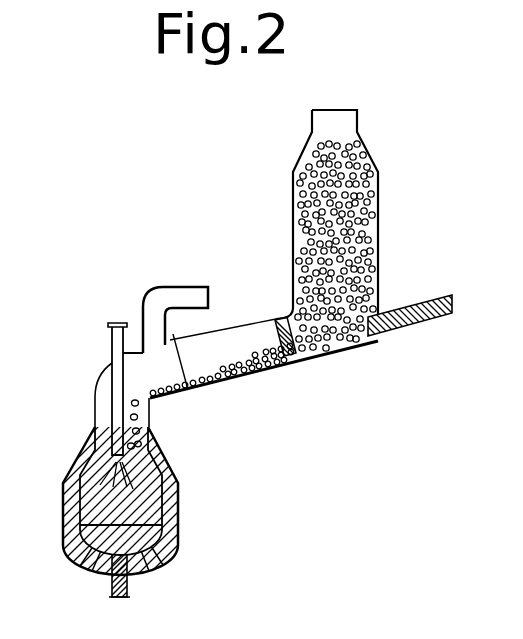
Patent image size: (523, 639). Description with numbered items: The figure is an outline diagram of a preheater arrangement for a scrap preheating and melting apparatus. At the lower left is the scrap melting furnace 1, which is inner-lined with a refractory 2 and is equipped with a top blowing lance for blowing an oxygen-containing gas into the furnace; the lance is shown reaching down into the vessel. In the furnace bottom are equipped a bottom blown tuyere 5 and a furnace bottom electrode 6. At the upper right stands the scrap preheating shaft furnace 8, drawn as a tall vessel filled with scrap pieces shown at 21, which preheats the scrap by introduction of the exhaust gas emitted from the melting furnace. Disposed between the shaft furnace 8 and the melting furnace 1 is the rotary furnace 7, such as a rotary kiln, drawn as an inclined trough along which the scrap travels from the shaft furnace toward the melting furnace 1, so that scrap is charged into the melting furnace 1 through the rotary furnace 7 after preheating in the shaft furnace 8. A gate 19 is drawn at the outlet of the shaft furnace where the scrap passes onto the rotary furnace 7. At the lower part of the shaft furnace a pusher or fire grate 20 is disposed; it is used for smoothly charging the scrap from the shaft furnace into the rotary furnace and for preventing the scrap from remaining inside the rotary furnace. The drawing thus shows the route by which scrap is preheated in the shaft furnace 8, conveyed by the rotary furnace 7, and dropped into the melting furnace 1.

The melting furnace 1 is at (173, 465).
The refractory 2 is at (178, 505).
The bottom blown tuyere 5 is at (92, 565).
The furnace bottom electrode 6 is at (127, 585).
The rotary furnace 7 is at (250, 372).
The shaft furnace 8 is at (378, 207).
The gate 19 is at (290, 357).
The pusher or fire grate 20 is at (427, 293).
The pellets 21 is at (348, 152).